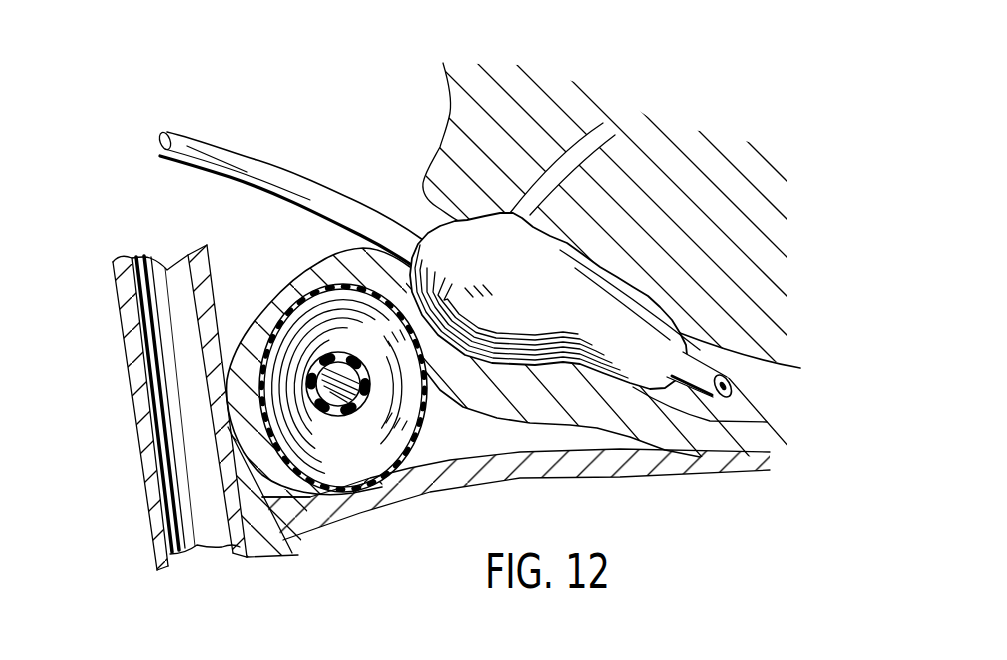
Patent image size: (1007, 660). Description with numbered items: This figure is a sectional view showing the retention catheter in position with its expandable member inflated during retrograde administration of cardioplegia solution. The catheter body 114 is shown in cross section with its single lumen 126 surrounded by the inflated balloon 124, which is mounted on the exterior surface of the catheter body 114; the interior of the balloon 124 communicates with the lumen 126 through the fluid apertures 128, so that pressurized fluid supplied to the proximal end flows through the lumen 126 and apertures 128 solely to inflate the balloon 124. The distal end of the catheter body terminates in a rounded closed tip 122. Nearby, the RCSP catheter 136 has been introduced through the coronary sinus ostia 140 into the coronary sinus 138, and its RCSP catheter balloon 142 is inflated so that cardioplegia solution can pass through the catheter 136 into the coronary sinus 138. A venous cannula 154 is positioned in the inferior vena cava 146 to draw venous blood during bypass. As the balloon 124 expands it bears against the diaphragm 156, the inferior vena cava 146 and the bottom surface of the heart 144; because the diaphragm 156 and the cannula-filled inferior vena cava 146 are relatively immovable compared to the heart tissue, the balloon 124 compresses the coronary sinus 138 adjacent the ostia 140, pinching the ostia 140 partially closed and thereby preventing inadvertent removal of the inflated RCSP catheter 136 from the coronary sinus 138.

The catheter body 114 is at (313, 405).
The closed tip 122 is at (733, 383).
The balloon 124 is at (421, 426).
The lumen 126 is at (392, 386).
The fluid apertures 128 is at (338, 352).
The RCSP catheter 136 is at (277, 167).
The coronary sinus 138 is at (723, 352).
The coronary sinus ostia 140 is at (420, 197).
The RCSP catheter balloon 142 is at (633, 258).
The heart 144 is at (710, 180).
The inferior vena cava 146 is at (254, 535).
The venous cannula 154 is at (133, 402).
The diaphragm 156 is at (730, 467).